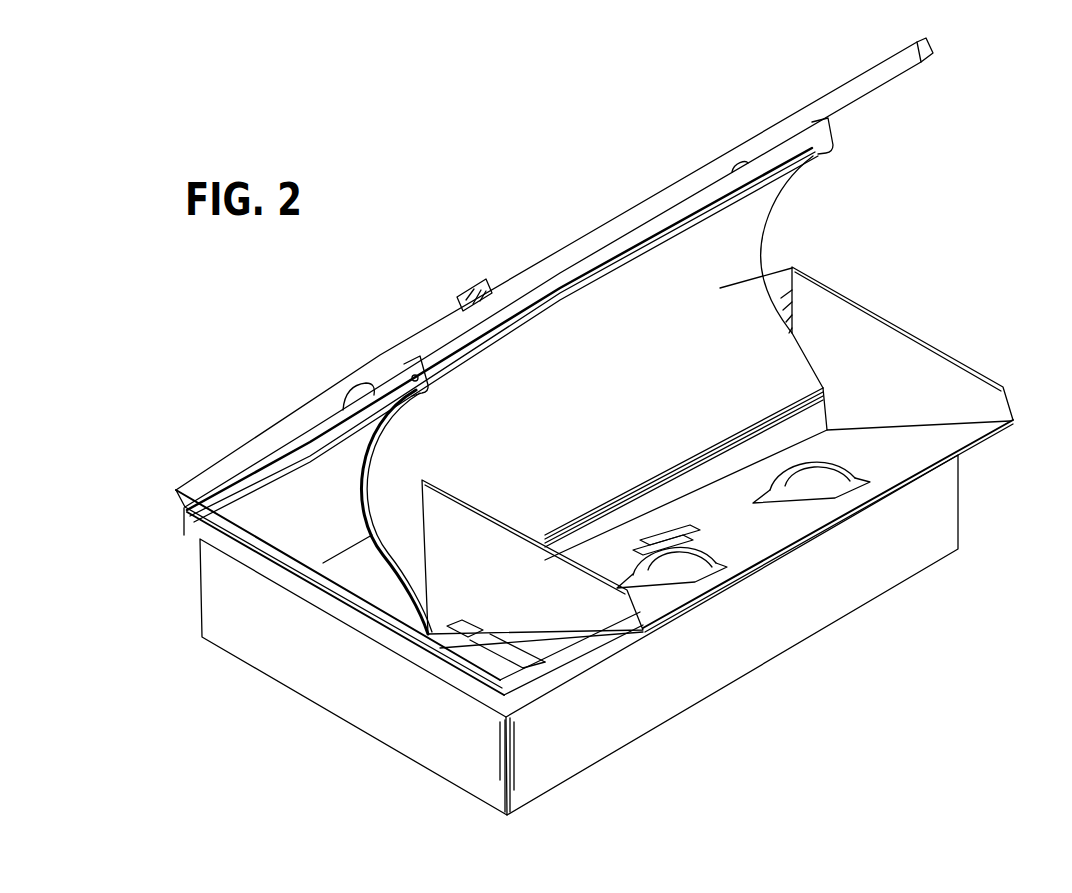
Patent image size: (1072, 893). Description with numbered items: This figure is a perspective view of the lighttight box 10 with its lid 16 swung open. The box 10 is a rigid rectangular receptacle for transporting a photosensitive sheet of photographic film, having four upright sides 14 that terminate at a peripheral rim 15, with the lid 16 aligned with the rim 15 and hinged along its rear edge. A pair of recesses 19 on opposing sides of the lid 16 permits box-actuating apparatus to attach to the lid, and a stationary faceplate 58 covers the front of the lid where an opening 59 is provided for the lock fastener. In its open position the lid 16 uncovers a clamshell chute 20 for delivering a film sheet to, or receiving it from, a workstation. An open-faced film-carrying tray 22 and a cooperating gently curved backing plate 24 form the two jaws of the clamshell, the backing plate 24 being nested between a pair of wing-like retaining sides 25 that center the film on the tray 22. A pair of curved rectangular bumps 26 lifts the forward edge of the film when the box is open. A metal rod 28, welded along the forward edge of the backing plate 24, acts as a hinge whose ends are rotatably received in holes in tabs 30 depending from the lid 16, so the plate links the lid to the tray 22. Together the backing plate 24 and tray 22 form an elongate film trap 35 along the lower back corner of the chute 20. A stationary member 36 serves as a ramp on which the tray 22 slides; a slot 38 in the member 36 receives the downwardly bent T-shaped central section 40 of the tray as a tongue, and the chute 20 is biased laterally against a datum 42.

The lighttight box 10 is at (230, 673).
The upright sides 14 is at (345, 700).
The peripheral rim 15 is at (187, 522).
The lid 16 is at (510, 277).
The recesses 19 is at (352, 397).
The clamshell chute 20 is at (845, 225).
The film-carrying tray 22 is at (937, 445).
The backing plate 24 is at (778, 268).
The retaining sides 25 is at (885, 345).
The curved rectangular bumps 26 is at (845, 470).
The metal rod 28 is at (815, 158).
The tabs 30 is at (405, 360).
The film trap 35 is at (762, 470).
The stationary member 36 is at (518, 657).
The slot 38 is at (678, 527).
The T-shaped central section 40 is at (667, 535).
The datum 42 is at (470, 630).
The faceplate 58 is at (562, 660).
The opening 59 is at (745, 160).